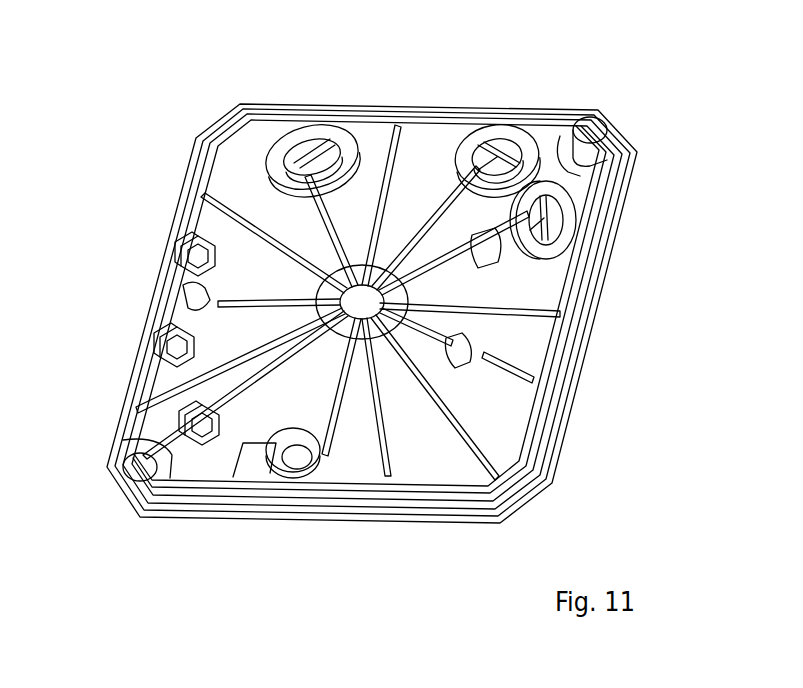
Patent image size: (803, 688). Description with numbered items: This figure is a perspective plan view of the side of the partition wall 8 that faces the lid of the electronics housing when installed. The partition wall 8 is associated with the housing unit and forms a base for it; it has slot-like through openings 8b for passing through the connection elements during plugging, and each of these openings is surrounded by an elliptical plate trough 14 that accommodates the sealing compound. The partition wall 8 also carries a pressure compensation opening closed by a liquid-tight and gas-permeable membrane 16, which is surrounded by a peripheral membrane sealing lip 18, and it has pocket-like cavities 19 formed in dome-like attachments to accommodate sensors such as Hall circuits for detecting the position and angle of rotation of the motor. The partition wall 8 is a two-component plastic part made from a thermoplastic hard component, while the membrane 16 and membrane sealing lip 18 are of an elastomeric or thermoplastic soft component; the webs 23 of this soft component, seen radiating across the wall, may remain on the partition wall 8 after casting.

The partition wall 8 is at (258, 555).
The through openings 8b is at (276, 140).
The plate troughs 14 is at (312, 135).
The membrane 16 is at (296, 463).
The membrane sealing lip 18 is at (333, 470).
The pocket like cavities 19 is at (206, 238).
The webs 23 is at (426, 205).